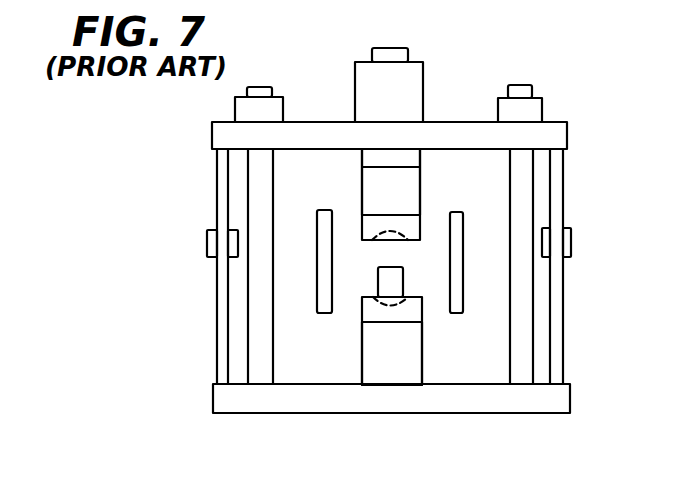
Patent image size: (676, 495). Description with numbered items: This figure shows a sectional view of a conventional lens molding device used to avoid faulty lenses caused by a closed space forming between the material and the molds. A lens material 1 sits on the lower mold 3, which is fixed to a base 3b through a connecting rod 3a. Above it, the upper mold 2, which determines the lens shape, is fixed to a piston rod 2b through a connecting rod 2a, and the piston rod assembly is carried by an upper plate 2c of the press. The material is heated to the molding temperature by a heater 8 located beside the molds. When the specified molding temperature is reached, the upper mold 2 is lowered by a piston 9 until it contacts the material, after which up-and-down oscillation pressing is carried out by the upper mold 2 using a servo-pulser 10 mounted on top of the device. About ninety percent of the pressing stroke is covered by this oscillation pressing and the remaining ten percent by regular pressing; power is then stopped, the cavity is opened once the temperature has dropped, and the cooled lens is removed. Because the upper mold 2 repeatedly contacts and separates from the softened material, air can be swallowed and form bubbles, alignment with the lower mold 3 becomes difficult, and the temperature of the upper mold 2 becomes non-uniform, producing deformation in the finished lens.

The workpiece 1 is at (394, 276).
The upper mold 2 is at (412, 222).
The connecting rod 2a is at (412, 187).
The piston rod 2b is at (412, 158).
The upper platen 2c is at (564, 137).
The lower mold 3 is at (413, 310).
The connecting rod 3a is at (413, 342).
The base 3b is at (455, 402).
The heater 8 is at (457, 277).
The piston 9 is at (210, 248).
The servo-pulser 10 is at (418, 92).